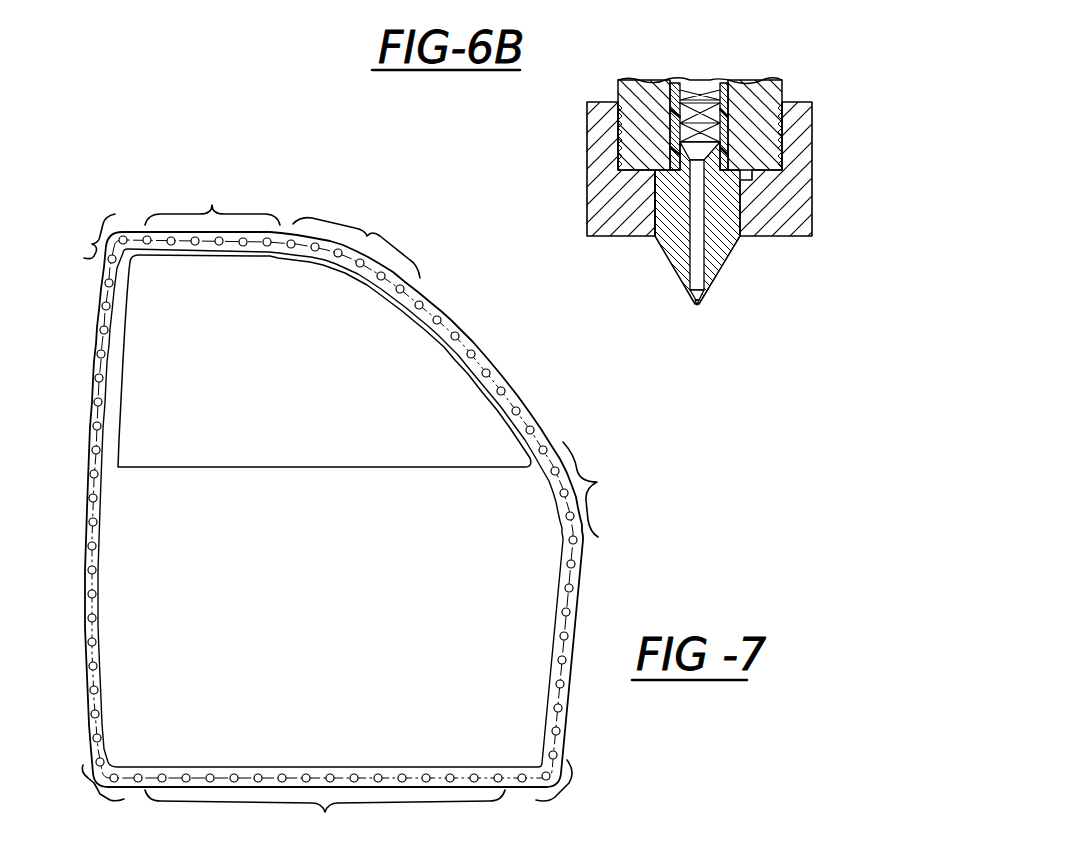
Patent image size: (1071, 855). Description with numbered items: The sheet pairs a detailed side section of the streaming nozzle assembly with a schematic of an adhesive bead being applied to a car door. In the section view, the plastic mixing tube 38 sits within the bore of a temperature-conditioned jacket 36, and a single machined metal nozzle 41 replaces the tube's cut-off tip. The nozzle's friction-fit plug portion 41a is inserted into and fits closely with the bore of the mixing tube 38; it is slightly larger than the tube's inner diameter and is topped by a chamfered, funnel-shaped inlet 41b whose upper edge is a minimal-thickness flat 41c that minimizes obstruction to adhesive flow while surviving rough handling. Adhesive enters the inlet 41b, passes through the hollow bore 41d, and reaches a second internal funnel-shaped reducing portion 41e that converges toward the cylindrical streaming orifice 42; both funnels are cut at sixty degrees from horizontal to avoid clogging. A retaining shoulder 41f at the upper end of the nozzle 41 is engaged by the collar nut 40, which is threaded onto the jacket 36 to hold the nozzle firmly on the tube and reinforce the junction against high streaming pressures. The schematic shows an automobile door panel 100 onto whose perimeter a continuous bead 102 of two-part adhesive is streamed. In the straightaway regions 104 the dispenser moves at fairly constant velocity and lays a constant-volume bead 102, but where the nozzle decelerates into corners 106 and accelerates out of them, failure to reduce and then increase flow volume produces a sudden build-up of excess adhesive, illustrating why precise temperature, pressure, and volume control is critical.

In FIG. 6B, the temperature-conditioned jacket 36 is at (628, 90).
In FIG. 6B, the mixing tube 38 is at (726, 113).
In FIG. 6B, the collar nut 40 is at (812, 168).
In FIG. 6B, the nozzle 41 is at (717, 277).
In FIG. 6B, the plug portion 41a is at (724, 158).
In FIG. 6B, the funnel-shaped inlet 41b is at (681, 110).
In FIG. 6B, the upper edge flat 41c is at (700, 150).
In FIG. 6B, the hollow bore 41d is at (698, 232).
In FIG. 6B, the funnel-shaped reducing portion 41e is at (690, 290).
In FIG. 6B, the retaining shoulder 41f is at (652, 173).
In FIG. 6B, the streaming orifice 42 is at (697, 304).
In FIG. 7, the automobile door panel 100 is at (336, 613).
In FIG. 7, the adhesive bead 102 is at (418, 310).
In FIG. 7, the straightaway regions 104 is at (325, 512).
In FIG. 7, the corners 106 is at (337, 507).